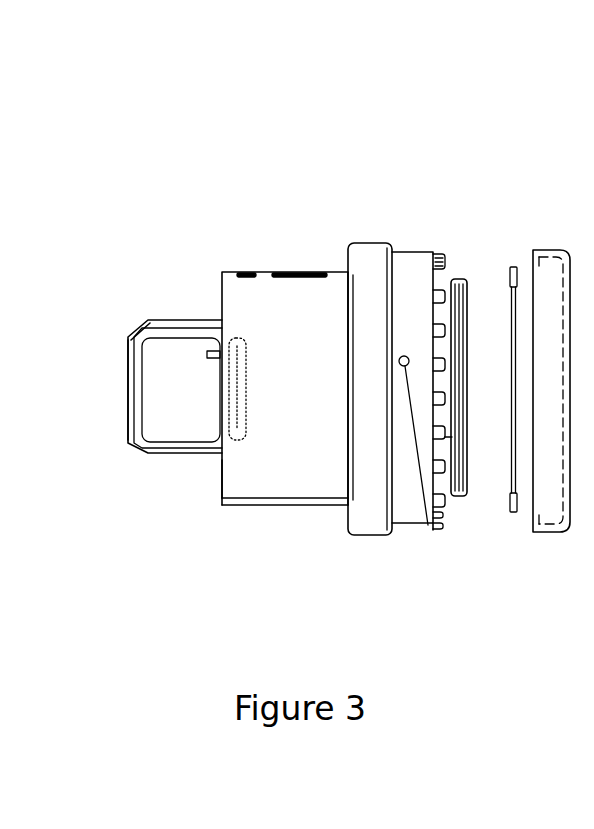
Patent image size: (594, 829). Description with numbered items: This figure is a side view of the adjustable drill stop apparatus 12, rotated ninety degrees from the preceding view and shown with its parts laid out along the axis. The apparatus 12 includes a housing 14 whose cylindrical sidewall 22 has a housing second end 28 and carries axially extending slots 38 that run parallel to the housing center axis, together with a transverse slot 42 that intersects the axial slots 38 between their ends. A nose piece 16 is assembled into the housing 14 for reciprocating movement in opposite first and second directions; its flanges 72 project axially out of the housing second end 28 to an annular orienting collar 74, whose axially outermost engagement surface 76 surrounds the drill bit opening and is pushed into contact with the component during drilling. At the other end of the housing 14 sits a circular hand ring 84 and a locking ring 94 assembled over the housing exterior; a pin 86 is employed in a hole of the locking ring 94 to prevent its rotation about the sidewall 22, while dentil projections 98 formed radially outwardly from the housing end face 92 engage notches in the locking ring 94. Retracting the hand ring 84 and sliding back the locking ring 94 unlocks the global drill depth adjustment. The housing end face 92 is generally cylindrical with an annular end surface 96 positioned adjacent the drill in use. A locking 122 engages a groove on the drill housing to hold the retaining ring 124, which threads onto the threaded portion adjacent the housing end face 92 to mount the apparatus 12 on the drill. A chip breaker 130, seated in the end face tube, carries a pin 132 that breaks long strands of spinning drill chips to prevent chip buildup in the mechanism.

The adjustable drill stop apparatus 12 is at (339, 182).
The housing 14 is at (270, 480).
The nose piece 16 is at (162, 445).
The cylindrical sidewall 22 is at (324, 487).
The housing second end 28 is at (222, 481).
The axially extending slots 38 is at (296, 252).
The transverse slot 42 is at (255, 252).
The flanges 72 is at (182, 330).
The annular orienting collar 74 is at (132, 332).
The engagement surface 76 is at (127, 350).
The circular hand ring 84 is at (375, 252).
The pin 86 is at (403, 355).
The housing end face 92 is at (457, 276).
The locking ring 94 is at (412, 510).
The annular end surface 96 is at (463, 338).
The dentil projections 98 is at (437, 246).
The locking 122 is at (512, 257).
The retaining ring 124 is at (568, 268).
The chip breaker 130 is at (244, 442).
The pin 132 is at (212, 360).